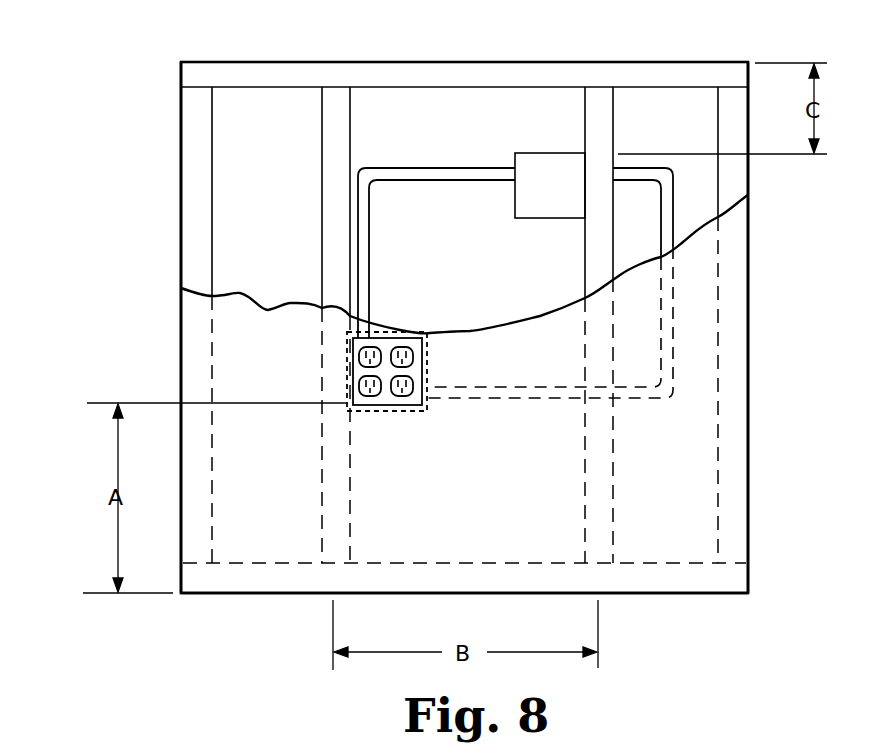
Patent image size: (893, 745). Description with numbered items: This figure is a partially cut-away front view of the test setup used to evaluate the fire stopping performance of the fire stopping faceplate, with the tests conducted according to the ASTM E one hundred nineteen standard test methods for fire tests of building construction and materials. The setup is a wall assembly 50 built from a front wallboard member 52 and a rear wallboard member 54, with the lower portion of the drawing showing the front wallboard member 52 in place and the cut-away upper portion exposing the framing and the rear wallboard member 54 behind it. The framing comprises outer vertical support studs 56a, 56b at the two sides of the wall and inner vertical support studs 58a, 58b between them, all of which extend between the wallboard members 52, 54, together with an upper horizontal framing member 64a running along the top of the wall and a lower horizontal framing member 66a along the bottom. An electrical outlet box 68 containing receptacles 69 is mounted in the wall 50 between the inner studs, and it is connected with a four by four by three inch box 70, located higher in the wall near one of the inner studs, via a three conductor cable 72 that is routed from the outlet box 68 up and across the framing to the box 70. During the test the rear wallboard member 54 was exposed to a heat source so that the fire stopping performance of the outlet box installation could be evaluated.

The wall assembly 50 is at (170, 143).
The front wallboard member 52 is at (269, 520).
The rear wallboard member 54 is at (279, 177).
The outer vertical support stud 56a is at (188, 346).
The outer vertical support stud 56b is at (737, 372).
The inner vertical support stud 58a is at (331, 456).
The inner vertical support stud 58b is at (600, 463).
The upper horizontal framing member 64a is at (427, 74).
The lower horizontal framing member 66a is at (260, 594).
The electrical outlet box 68 is at (398, 412).
The receptacles 69 is at (413, 356).
The box 70 is at (550, 167).
The three conductor cable 72 is at (545, 396).